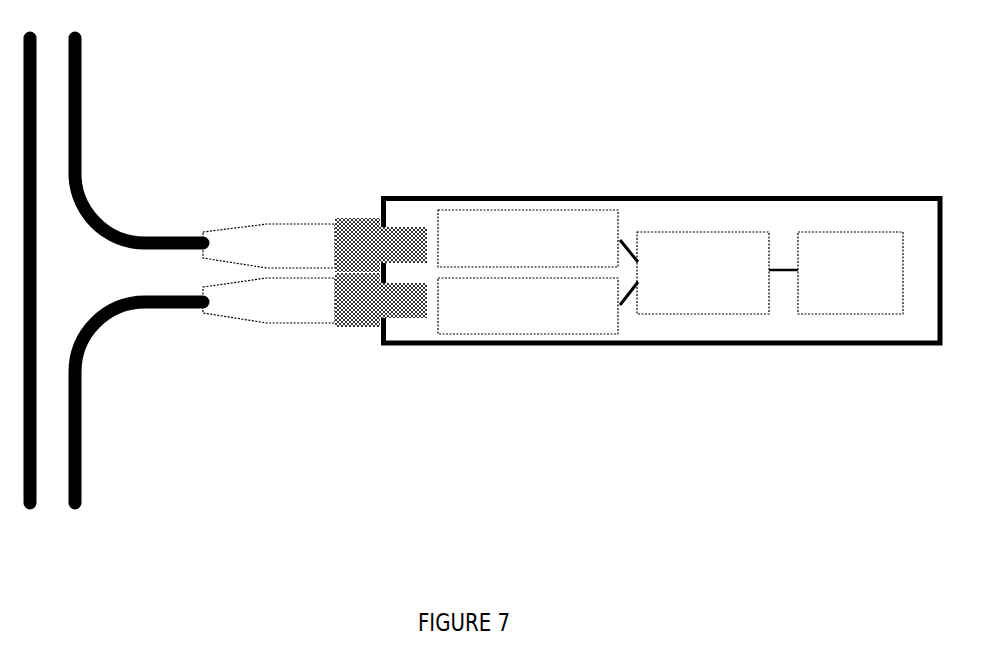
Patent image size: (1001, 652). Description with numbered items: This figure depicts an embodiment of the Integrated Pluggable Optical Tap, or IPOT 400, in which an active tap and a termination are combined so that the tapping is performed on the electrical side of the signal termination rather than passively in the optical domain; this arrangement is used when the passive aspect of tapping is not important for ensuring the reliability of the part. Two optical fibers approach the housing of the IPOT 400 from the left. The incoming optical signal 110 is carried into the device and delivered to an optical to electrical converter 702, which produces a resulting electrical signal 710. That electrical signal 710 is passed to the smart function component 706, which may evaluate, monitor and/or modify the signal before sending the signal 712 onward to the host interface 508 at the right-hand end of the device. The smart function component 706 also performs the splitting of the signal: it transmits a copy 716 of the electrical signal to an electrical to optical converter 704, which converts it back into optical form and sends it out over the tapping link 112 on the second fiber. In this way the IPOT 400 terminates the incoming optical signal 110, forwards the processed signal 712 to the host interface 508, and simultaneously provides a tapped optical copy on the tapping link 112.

The incoming optical signal 110 is at (95, 198).
The tapping link 112 is at (90, 347).
The IPOT 400 is at (742, 145).
The optical to electrical converter 702 is at (535, 222).
The electrical to optical converter 704 is at (505, 320).
The smart function component 706 is at (703, 297).
The electrical signal 710 is at (636, 260).
The copy of the electrical signal 716 is at (627, 297).
The signal 712 is at (779, 272).
The host interface 508 is at (850, 300).